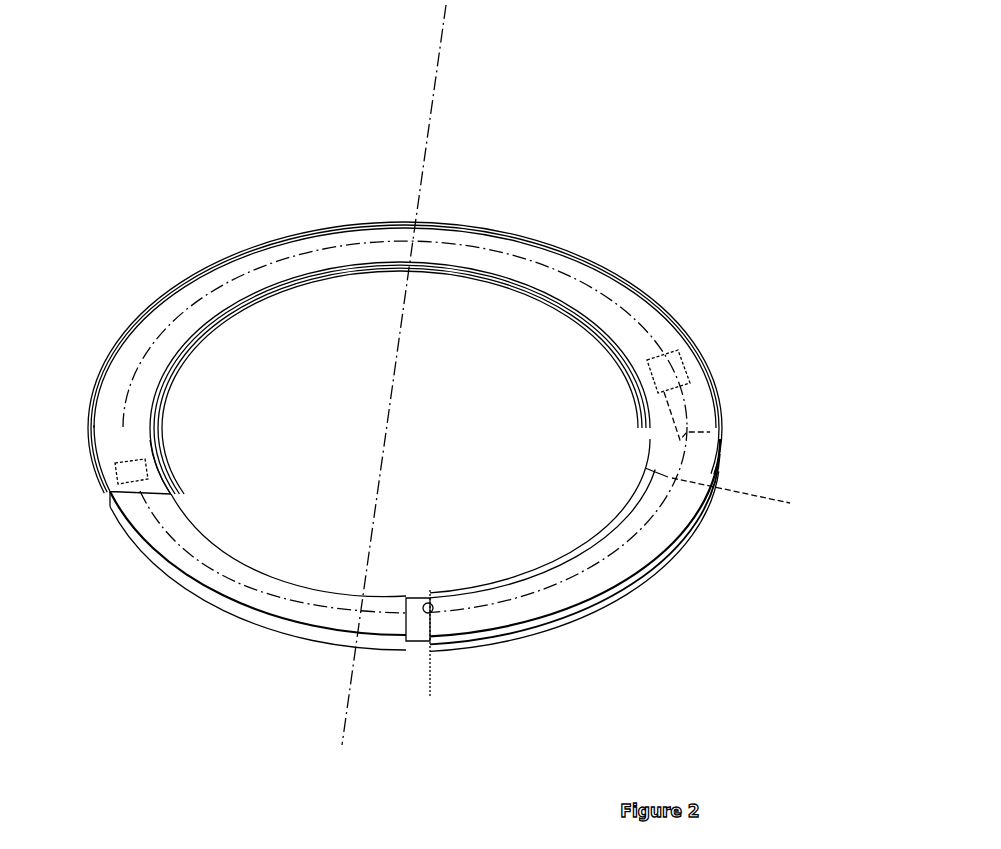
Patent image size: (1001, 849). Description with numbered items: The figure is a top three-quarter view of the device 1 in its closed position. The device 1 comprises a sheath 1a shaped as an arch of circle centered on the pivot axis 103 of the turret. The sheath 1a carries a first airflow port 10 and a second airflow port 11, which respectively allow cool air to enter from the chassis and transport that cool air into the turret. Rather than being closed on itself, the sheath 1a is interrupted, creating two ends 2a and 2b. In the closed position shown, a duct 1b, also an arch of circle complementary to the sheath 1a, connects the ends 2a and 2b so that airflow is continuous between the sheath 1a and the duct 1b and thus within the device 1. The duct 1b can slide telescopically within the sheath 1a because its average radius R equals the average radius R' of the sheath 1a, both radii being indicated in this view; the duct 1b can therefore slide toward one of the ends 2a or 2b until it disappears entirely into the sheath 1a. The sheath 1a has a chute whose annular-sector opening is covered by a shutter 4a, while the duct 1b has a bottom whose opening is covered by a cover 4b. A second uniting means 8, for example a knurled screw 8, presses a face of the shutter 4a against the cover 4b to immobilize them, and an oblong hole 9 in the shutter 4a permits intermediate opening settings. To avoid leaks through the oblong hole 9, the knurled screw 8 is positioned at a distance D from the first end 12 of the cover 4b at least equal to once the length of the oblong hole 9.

The device 1 is at (182, 130).
The sheath 1a is at (334, 206).
The duct 1b is at (185, 605).
The end 2a is at (103, 507).
The end 2b is at (415, 675).
The shutter 4a is at (515, 266).
The cover 4b is at (192, 540).
The second uniting means 8 is at (428, 600).
The oblong hole 9 is at (583, 548).
The first airflow port 10 is at (653, 372).
The second airflow port 11 is at (118, 470).
The first end of the cover 12 is at (660, 470).
The pivot axis 103 is at (442, 76).
The average radius of the duct R is at (322, 500).
The average radius of the sheath R' is at (259, 384).
The distance D is at (437, 688).